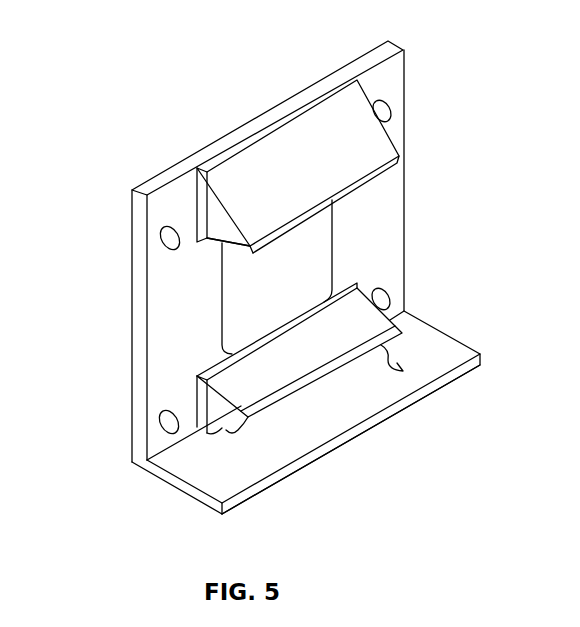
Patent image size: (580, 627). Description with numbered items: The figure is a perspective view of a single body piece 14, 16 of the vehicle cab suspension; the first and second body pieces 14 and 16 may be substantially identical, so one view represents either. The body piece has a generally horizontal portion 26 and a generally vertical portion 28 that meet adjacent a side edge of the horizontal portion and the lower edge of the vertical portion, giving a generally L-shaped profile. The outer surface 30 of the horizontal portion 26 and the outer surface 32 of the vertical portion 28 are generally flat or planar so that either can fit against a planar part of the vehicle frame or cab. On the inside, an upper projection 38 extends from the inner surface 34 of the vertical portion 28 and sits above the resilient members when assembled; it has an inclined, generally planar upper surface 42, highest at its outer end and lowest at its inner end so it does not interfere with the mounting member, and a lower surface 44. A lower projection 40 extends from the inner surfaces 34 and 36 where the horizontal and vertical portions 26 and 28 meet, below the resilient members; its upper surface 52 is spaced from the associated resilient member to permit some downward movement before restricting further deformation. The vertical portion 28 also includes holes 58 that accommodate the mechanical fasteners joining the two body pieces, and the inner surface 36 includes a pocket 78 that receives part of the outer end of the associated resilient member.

The first body piece 14 is at (295, 277).
The second body piece 16 is at (295, 277).
The generally horizontal portion 26 is at (335, 424).
The generally vertical portion 28 is at (280, 261).
The outer surface of the generally horizontal portion 30 is at (210, 506).
The outer surface of the generally vertical portion 32 is at (140, 319).
The inner surface of the generally horizontal portion 34 is at (335, 424).
The inner surface of the generally vertical portion 36 is at (280, 261).
The upper projection 38 is at (362, 97).
The lower projection 40 is at (228, 430).
The upper surface of the upper projection 42 is at (243, 160).
The lower surface of the upper projection 44 is at (236, 249).
The upper surface of the lower projection 52 is at (264, 394).
The holes 58 is at (171, 224).
The pocket 78 is at (240, 302).